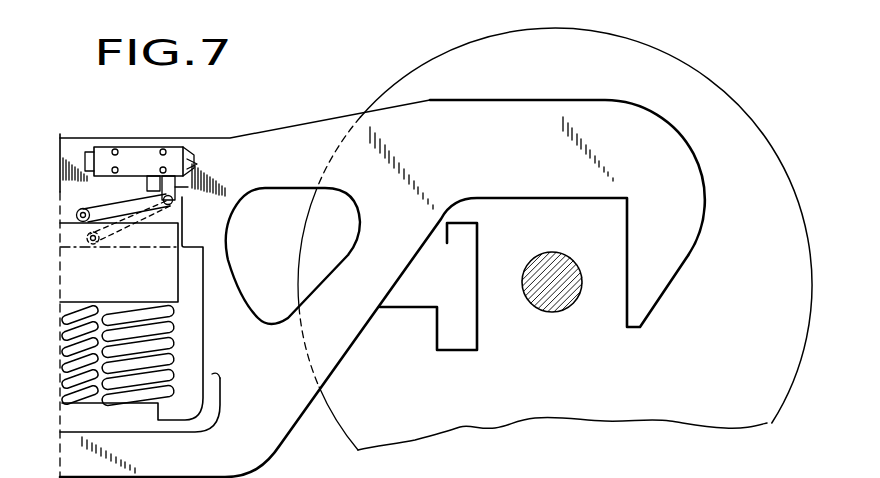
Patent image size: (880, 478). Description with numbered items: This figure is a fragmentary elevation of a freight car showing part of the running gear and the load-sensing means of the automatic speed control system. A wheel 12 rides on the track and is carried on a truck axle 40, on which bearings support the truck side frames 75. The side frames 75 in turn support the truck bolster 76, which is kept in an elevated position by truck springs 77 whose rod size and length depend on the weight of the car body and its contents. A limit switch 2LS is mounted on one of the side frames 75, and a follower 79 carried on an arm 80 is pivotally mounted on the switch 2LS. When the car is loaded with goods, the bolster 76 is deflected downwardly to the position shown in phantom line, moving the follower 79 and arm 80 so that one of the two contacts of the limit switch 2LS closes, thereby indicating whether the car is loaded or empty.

The wheels 12 is at (406, 75).
The truck side frames 75 is at (315, 121).
The limit switch 2LS is at (143, 146).
The arm 80 is at (121, 201).
The follower 79 is at (77, 215).
The truck bolster 76 is at (148, 280).
The truck springs 77 is at (72, 358).
The truck axle 40 is at (557, 312).